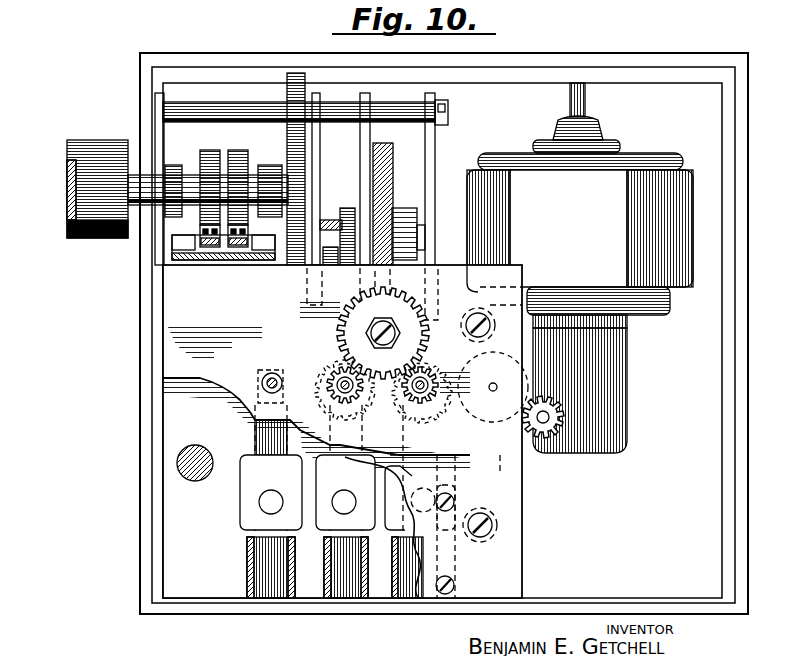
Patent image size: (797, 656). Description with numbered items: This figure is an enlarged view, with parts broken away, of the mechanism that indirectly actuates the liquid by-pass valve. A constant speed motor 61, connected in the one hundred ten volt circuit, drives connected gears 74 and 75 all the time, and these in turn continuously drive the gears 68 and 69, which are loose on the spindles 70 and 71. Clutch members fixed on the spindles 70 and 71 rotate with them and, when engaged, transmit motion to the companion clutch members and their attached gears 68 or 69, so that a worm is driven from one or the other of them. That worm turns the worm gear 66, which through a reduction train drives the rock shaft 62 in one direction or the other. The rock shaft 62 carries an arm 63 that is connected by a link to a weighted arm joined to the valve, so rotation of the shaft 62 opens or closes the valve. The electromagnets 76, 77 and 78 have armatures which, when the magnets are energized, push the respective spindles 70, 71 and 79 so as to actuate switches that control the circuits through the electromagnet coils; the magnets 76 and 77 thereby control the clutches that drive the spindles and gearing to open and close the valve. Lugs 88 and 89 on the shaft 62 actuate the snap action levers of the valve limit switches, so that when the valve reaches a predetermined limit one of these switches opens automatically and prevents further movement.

The constant speed motor 61 is at (580, 268).
The rock shaft 62 is at (137, 182).
The arm 63 is at (67, 196).
The worm gear 66 is at (392, 176).
The gear 68 is at (438, 413).
The gear 69 is at (317, 378).
The spindle 70 is at (412, 397).
The spindle 71 is at (336, 395).
The gear 74 is at (550, 438).
The gear 75 is at (493, 416).
The electromagnet 76 is at (416, 600).
The electromagnet 77 is at (345, 600).
The electromagnet 78 is at (274, 600).
The spindle 79 is at (261, 383).
The lug 88 is at (240, 246).
The lug 89 is at (212, 246).